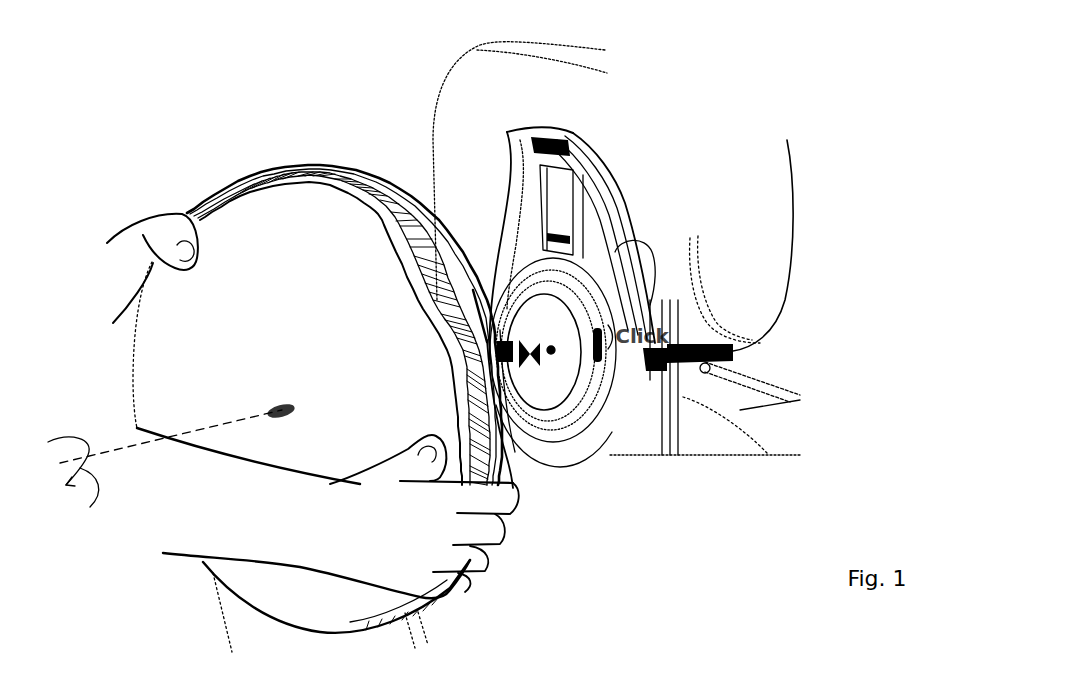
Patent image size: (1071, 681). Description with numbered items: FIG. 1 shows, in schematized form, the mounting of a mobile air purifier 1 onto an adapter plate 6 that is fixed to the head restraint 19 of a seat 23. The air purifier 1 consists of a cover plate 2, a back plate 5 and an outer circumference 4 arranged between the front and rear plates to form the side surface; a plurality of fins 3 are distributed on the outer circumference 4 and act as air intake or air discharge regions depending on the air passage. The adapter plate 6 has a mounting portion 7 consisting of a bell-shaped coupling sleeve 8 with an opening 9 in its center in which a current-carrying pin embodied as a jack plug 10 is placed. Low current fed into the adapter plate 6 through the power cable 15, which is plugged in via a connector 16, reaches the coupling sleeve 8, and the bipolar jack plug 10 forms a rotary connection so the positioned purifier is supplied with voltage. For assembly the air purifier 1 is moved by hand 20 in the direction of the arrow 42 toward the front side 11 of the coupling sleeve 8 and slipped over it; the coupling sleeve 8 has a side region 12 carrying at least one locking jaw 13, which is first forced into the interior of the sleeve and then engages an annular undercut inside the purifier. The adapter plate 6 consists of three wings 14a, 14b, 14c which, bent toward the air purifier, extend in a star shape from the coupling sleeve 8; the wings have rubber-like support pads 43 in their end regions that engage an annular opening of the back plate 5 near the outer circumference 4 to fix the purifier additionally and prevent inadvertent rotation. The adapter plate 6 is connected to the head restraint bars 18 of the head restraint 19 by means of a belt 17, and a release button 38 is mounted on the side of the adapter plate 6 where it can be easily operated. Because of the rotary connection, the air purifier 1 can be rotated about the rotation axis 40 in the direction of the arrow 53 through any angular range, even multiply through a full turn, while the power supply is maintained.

The air purifier 1 is at (200, 315).
The cover plate 2 is at (246, 373).
The fins 3 is at (323, 174).
The outer circumference 4 is at (272, 166).
The back plate 5 is at (368, 186).
The adapter plate 6 is at (580, 293).
The mounting portion 7 is at (553, 397).
The coupling sleeve 8 is at (560, 388).
The opening 9 is at (551, 355).
The jack plug 10 is at (516, 356).
The front side 11 is at (566, 327).
The side region 12 is at (630, 232).
The locking jaw 13 is at (590, 398).
The wing 14a is at (591, 160).
The wing 14b is at (660, 428).
The wing 14c is at (547, 357).
The power cable 15 is at (651, 258).
The connector 16 is at (618, 248).
The belt 17 is at (735, 355).
The head restraint bars 18 is at (713, 368).
The head restraint 19 is at (742, 220).
The hand 20 is at (238, 512).
The seat 23 is at (700, 443).
The release button 38 is at (690, 368).
The rotation axis 40 is at (90, 453).
The arrow direction 42 is at (485, 330).
The support pads 43 is at (553, 137).
The arrow direction 53 is at (76, 493).